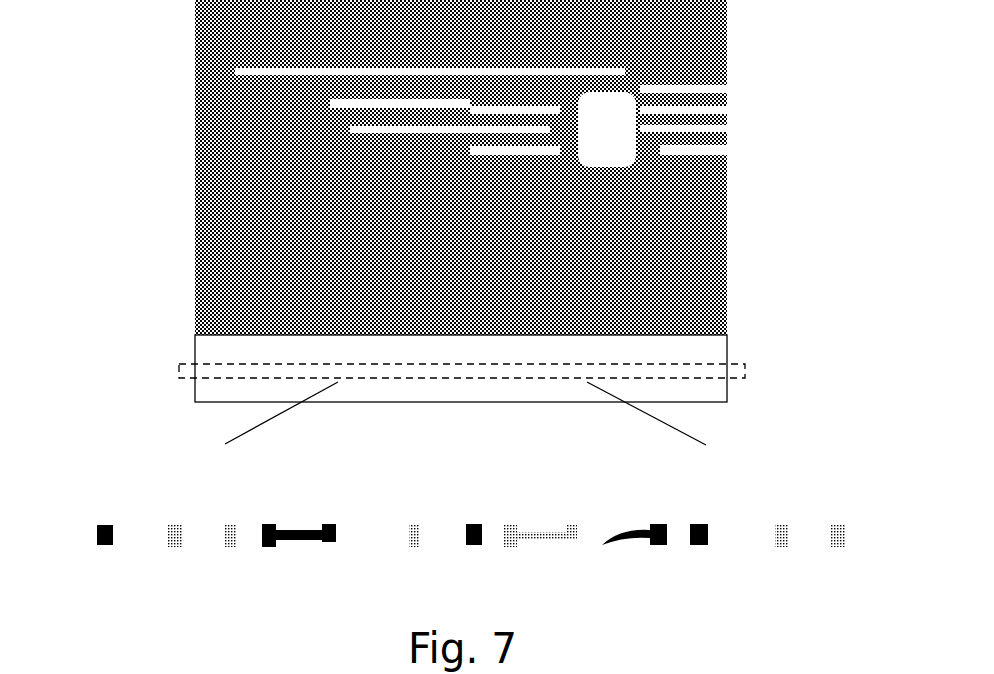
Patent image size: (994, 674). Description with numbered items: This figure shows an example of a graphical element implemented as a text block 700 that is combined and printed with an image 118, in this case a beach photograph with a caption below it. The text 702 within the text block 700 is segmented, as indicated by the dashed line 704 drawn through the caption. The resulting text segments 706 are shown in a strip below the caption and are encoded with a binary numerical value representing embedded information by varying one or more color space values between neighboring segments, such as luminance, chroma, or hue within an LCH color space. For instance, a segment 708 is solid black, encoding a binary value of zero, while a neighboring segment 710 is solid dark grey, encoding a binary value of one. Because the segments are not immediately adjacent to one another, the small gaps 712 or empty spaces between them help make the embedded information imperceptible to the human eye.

The image 118 is at (250, 37).
The text block 700 is at (195, 347).
The text 702 is at (456, 386).
The dashed line 704 is at (203, 377).
The text segments 706 is at (93, 507).
The segment 708 is at (101, 546).
The segment 710 is at (173, 547).
The gaps 712 is at (145, 547).